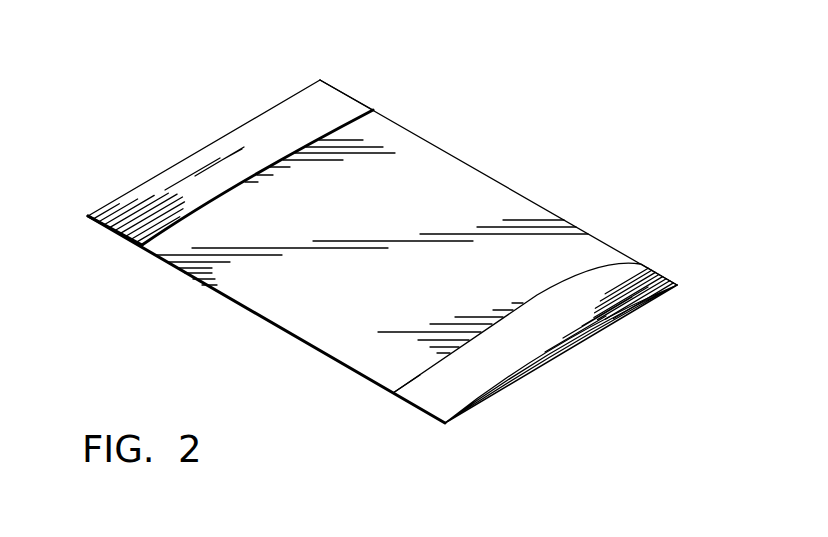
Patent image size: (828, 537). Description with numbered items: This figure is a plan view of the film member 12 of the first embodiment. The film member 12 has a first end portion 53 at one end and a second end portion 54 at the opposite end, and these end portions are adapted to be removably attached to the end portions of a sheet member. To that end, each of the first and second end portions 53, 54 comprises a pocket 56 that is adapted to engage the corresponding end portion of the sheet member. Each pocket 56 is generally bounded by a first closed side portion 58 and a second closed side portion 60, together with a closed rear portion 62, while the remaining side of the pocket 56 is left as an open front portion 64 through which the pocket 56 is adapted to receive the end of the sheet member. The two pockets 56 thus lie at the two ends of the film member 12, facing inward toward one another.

The film member 12 is at (254, 76).
The first end portion 53 is at (395, 392).
The second end portion 54 is at (125, 246).
The pocket 56 is at (165, 189).
The first closed side portion 58 is at (343, 93).
The second closed side portion 60 is at (108, 232).
The closed rear portion 62 is at (242, 127).
The open front portion 64 is at (243, 205).